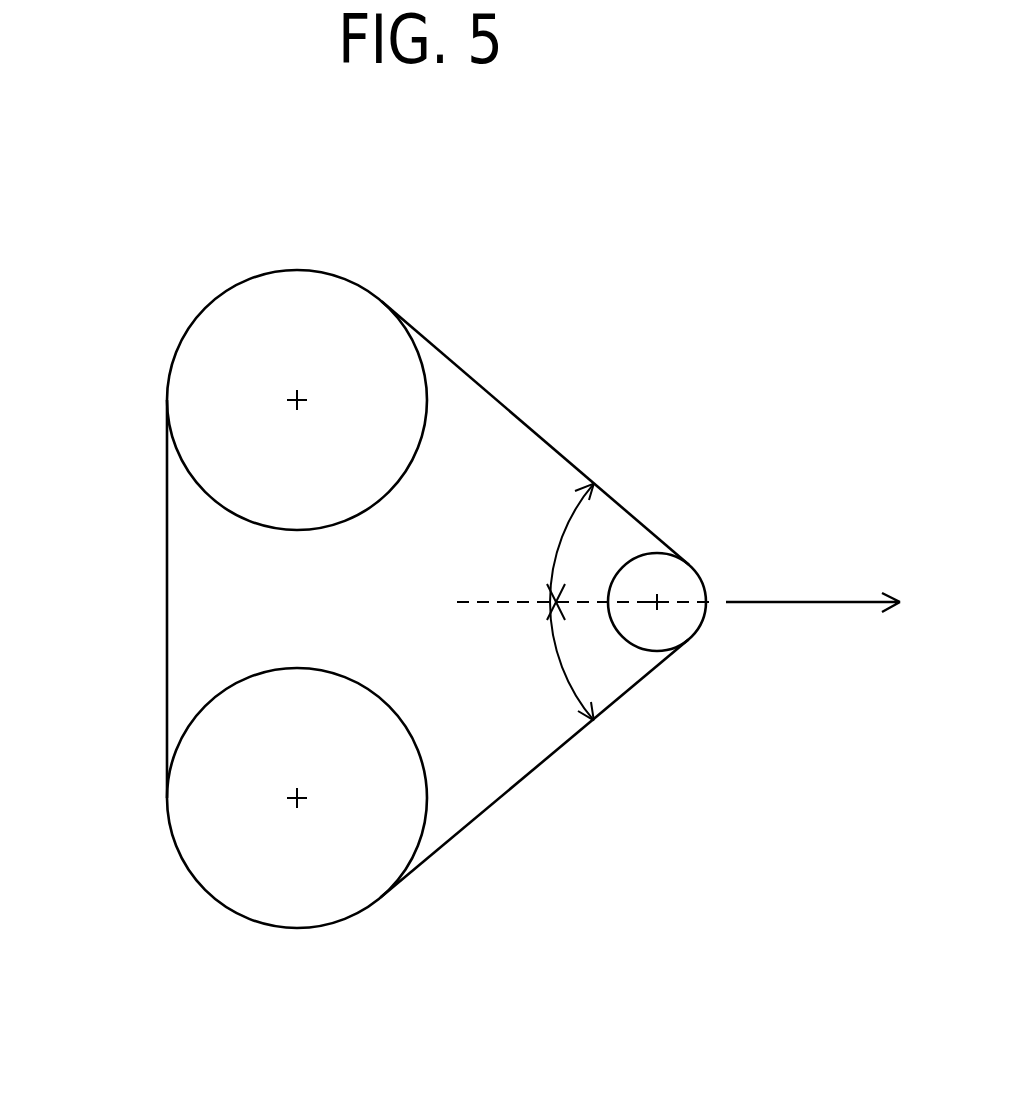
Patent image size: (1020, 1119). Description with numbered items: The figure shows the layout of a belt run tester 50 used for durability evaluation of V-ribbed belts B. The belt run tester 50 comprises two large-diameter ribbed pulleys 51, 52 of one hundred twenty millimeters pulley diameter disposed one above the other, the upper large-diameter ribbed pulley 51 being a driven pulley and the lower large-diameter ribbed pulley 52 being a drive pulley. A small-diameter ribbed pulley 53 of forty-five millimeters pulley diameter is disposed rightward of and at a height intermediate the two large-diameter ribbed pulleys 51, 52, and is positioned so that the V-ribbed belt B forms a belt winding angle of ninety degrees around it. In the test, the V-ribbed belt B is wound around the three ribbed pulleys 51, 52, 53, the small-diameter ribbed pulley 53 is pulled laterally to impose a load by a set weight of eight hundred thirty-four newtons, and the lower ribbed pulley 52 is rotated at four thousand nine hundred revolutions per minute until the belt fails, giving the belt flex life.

The belt run tester 50 is at (619, 201).
The large-diameter ribbed pulley 51 is at (293, 302).
The large-diameter ribbed pulley 52 is at (297, 905).
The small-diameter ribbed pulley 53 is at (673, 580).
The V-ribbed belt B is at (562, 437).